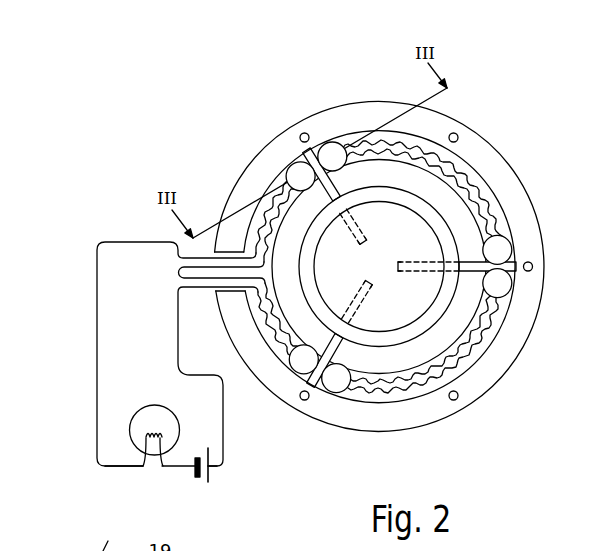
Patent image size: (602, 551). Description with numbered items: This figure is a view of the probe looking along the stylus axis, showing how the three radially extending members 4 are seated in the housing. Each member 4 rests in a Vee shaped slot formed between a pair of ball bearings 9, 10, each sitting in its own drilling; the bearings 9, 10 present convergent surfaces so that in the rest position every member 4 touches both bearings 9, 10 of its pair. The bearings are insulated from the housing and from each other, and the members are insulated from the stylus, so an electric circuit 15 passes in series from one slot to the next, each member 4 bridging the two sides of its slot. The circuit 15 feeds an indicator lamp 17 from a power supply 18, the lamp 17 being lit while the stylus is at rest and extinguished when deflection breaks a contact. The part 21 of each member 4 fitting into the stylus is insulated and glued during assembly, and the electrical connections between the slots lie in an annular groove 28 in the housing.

The member 4 is at (460, 272).
The ball bearing 9 is at (330, 141).
The ball bearing 10 is at (270, 141).
The electric circuit 15 is at (97, 325).
The indicator lamp 17 is at (150, 405).
The power supply 18 is at (212, 475).
The part of member 21 is at (410, 271).
The annular groove 28 is at (380, 403).